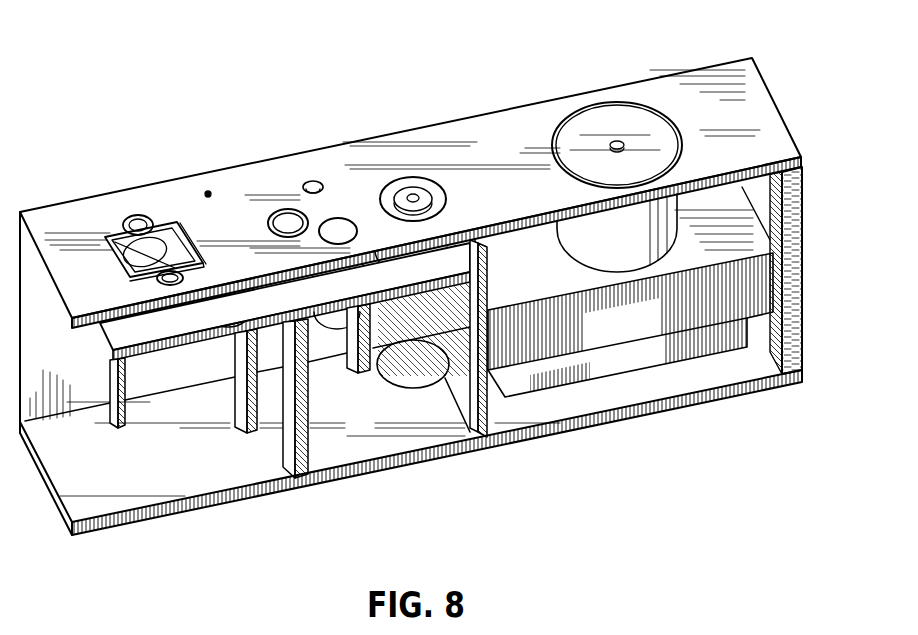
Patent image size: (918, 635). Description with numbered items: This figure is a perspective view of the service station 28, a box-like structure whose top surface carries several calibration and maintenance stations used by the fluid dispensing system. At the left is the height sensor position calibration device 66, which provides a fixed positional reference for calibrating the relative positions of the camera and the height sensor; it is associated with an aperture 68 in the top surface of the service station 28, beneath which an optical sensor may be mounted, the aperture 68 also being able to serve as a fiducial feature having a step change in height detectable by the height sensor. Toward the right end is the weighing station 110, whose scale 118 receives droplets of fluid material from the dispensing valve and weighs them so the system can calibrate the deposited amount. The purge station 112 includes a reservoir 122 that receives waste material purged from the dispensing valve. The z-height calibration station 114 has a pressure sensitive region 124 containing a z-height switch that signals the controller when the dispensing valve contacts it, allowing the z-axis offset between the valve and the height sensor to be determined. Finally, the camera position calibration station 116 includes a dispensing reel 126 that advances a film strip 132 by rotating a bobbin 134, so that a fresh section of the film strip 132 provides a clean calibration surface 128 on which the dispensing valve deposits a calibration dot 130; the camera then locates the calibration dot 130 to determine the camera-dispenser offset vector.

The service station 28 is at (573, 78).
The height sensor position calibration device 66 is at (208, 185).
The aperture 68 is at (212, 197).
The weighing station 110 is at (662, 132).
The purge station 112 is at (424, 199).
The z-height calibration station 114 is at (287, 205).
The camera position calibration station 116 is at (158, 222).
The scale 118 is at (582, 255).
The reservoir 122 is at (416, 388).
The pressure sensitive region 124 is at (294, 223).
The dispensing reel 126 is at (198, 250).
The calibration surface 128 is at (134, 267).
The calibration dot 130 is at (110, 242).
The film strip 132 is at (161, 231).
The bobbin 134 is at (228, 313).